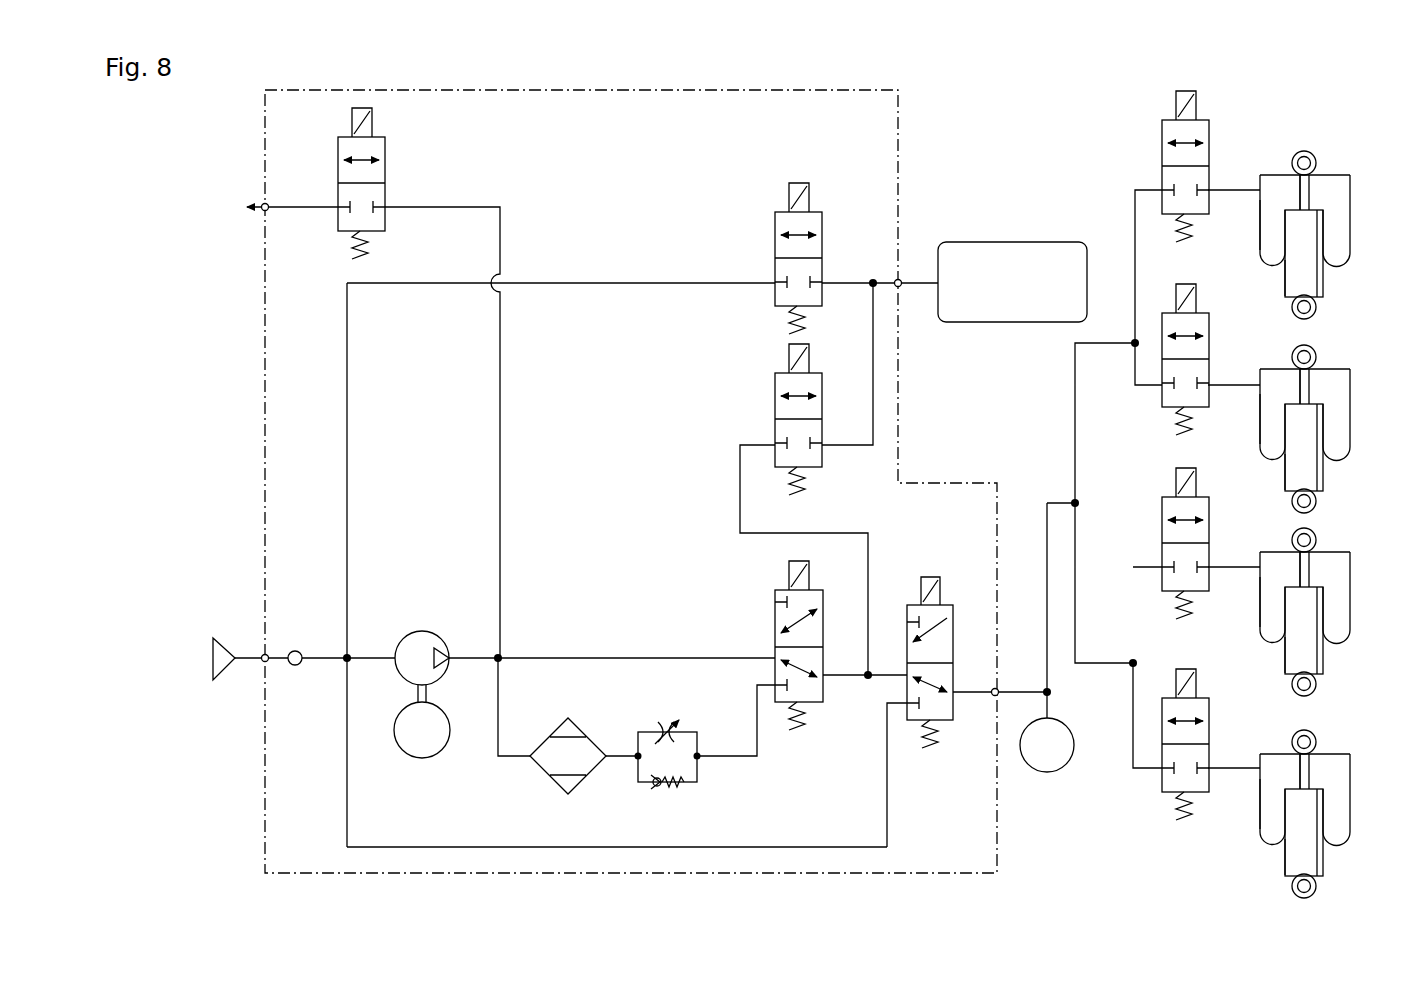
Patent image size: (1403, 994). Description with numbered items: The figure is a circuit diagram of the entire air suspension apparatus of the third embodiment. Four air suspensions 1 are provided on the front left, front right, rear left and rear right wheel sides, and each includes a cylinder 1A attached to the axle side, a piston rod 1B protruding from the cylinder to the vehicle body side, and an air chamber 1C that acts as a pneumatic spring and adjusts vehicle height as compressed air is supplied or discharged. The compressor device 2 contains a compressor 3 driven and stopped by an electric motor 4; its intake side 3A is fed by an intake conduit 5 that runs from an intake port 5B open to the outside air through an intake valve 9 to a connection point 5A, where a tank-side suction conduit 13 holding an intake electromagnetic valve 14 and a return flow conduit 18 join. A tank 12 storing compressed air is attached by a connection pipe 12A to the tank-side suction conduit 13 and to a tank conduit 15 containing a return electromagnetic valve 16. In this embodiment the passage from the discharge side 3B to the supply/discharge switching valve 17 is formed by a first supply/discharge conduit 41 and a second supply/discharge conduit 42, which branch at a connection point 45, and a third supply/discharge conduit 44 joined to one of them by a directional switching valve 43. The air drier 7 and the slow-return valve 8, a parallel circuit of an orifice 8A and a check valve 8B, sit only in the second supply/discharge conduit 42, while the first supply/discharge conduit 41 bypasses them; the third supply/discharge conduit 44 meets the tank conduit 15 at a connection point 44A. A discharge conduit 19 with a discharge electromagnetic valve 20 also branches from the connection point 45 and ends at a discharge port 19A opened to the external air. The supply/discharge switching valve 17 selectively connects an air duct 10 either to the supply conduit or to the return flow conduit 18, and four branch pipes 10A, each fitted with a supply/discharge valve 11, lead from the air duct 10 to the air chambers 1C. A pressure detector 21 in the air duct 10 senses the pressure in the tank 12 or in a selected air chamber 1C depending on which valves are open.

The air suspension 1 is at (1326, 172).
The cylinder 1A is at (1298, 275).
The piston rod 1B is at (1308, 198).
The air chamber 1C is at (1270, 212).
The compressor device 2 is at (900, 146).
The compressor 3 is at (420, 631).
The intake side 3A is at (397, 646).
The discharge side 3B is at (450, 650).
The electric motor 4 is at (422, 758).
The intake conduit 5 is at (320, 664).
The connection point 5A is at (350, 662).
The intake port 5B is at (222, 637).
The air drier 7 is at (567, 717).
The slow-return valve 8 is at (640, 731).
The orifice 8A is at (669, 730).
The check valve 8B is at (658, 788).
The intake valve 9 is at (295, 650).
The air duct 10 is at (1046, 560).
The branch pipe 10A is at (1135, 220).
The supply/discharge valve 11 is at (1176, 118).
The tank 12 is at (1024, 242).
The connection pipe 12A is at (927, 280).
The tank-side suction conduit 13 is at (548, 280).
The intake electromagnetic valve 14 is at (776, 212).
The tank conduit 15 is at (740, 500).
The return electromagnetic valve 16 is at (776, 376).
The supply/discharge switching valve 17 is at (907, 607).
The return flow conduit 18 is at (512, 846).
The discharge conduit 19 is at (498, 420).
The discharge port 19A is at (250, 216).
The discharge electromagnetic valve 20 is at (338, 180).
The pressure detector 21 is at (1047, 773).
The first supply/discharge conduit 41 is at (664, 657).
The second supply/discharge conduit 42 is at (522, 755).
The directional switching valve 43 is at (775, 614).
The third supply/discharge conduit 44 is at (884, 674).
The connection point 44A is at (870, 690).
The connection point 45 is at (500, 657).